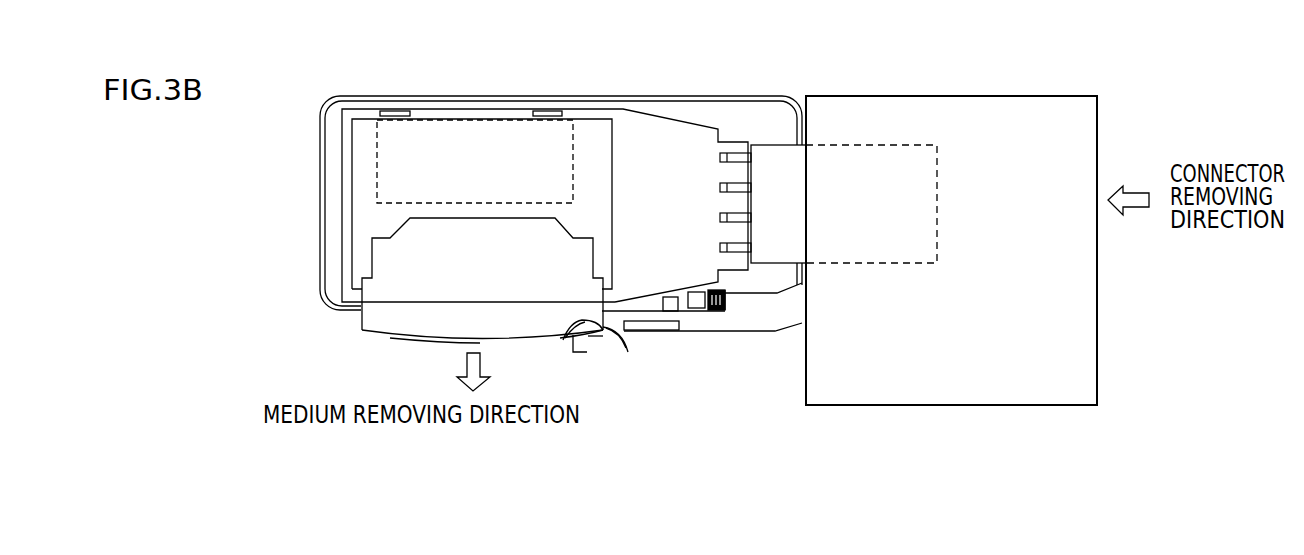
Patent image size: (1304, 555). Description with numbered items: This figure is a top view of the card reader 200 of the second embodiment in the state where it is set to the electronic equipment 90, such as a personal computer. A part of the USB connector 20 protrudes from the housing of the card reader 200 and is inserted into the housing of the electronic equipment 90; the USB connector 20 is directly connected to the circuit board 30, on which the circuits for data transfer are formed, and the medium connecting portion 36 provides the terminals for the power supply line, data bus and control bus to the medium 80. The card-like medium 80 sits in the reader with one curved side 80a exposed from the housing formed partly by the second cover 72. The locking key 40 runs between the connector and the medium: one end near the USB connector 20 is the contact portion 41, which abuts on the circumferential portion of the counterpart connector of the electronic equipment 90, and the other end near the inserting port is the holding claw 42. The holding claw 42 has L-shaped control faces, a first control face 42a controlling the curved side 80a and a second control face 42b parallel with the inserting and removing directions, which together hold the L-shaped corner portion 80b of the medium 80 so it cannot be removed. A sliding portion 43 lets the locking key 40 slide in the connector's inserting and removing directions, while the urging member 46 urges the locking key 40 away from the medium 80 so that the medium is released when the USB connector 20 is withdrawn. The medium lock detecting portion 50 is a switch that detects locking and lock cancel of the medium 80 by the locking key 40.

The card reader 200 is at (528, 82).
The second cover 72 is at (322, 158).
The circuit board 30 is at (678, 142).
The medium connecting portion 36 is at (377, 138).
The USB connector 20 is at (855, 153).
The electronic equipment 90 is at (1007, 97).
The locking key 40 is at (712, 318).
The contact portion 41 is at (806, 303).
The medium 80 is at (382, 322).
The curved side 80a is at (405, 336).
The corner portion 80b is at (571, 328).
The holding claw 42 is at (609, 335).
The first control face 42a is at (588, 336).
The second control face 42b is at (628, 338).
The sliding portion 43 is at (670, 331).
The medium lock detecting portion 50 is at (667, 298).
The urging member 46 is at (715, 290).